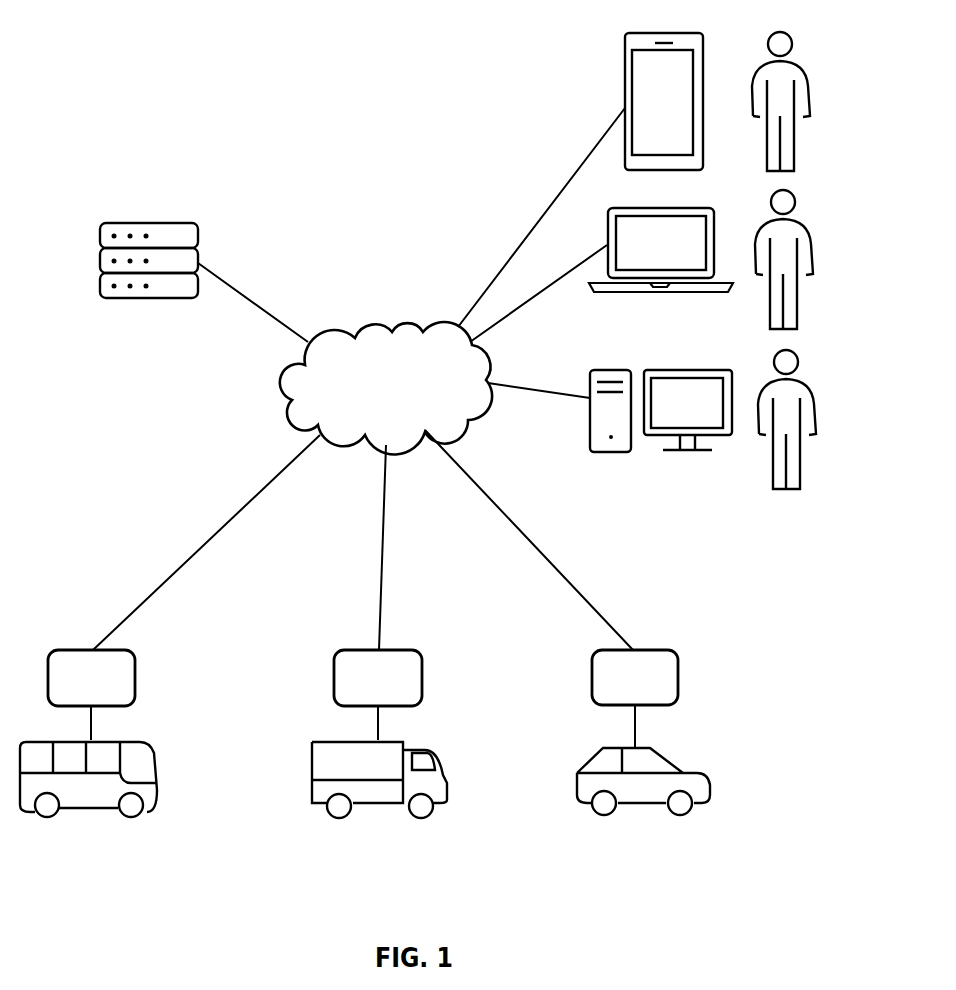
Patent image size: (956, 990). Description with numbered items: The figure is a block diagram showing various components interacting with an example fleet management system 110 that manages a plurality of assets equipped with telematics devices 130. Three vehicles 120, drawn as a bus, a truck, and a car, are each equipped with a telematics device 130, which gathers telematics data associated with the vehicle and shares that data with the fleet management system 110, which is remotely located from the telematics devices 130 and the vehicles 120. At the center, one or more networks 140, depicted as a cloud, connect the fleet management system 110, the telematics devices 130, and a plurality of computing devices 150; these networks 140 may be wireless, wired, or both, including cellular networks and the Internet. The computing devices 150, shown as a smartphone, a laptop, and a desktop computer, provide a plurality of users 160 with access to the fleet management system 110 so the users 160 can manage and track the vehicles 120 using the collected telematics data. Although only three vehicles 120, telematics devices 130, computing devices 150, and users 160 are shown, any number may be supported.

The fleet management system 110 is at (176, 222).
The vehicle 120 is at (145, 742).
The telematics device 130 is at (118, 650).
The network 140 is at (368, 323).
The computing device 150 is at (662, 33).
The user 160 is at (789, 35).